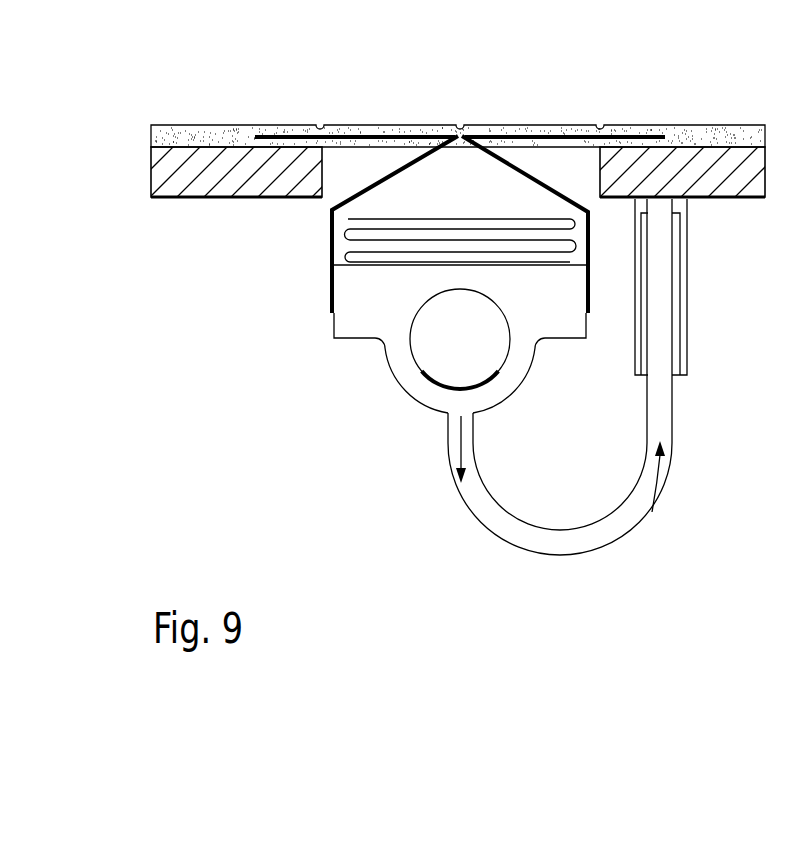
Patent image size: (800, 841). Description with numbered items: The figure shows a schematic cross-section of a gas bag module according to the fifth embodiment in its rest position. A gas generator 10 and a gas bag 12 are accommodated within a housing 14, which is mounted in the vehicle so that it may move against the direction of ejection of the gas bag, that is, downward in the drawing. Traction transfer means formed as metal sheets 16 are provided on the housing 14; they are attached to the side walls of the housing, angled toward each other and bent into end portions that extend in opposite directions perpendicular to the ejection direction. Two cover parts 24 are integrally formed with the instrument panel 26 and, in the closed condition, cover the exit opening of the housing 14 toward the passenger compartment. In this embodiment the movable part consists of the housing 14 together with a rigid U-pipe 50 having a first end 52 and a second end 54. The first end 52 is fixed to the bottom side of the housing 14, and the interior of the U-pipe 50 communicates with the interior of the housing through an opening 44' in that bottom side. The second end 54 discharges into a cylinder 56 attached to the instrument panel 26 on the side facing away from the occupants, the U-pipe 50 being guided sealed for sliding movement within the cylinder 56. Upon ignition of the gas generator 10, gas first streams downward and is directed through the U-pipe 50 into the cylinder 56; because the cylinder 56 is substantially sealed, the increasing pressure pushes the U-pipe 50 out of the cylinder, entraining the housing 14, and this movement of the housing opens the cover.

The gas generator 10 is at (475, 372).
The gas bag 12 is at (460, 240).
The housing 14 is at (357, 322).
The metal sheets 16 is at (332, 243).
The cover parts 24 is at (529, 124).
The instrument panel 26 is at (177, 187).
The opening 44' is at (560, 464).
The U-pipe 50 is at (617, 540).
The first end 52 is at (447, 422).
The second end 54 is at (673, 404).
The cylinder 56 is at (688, 298).